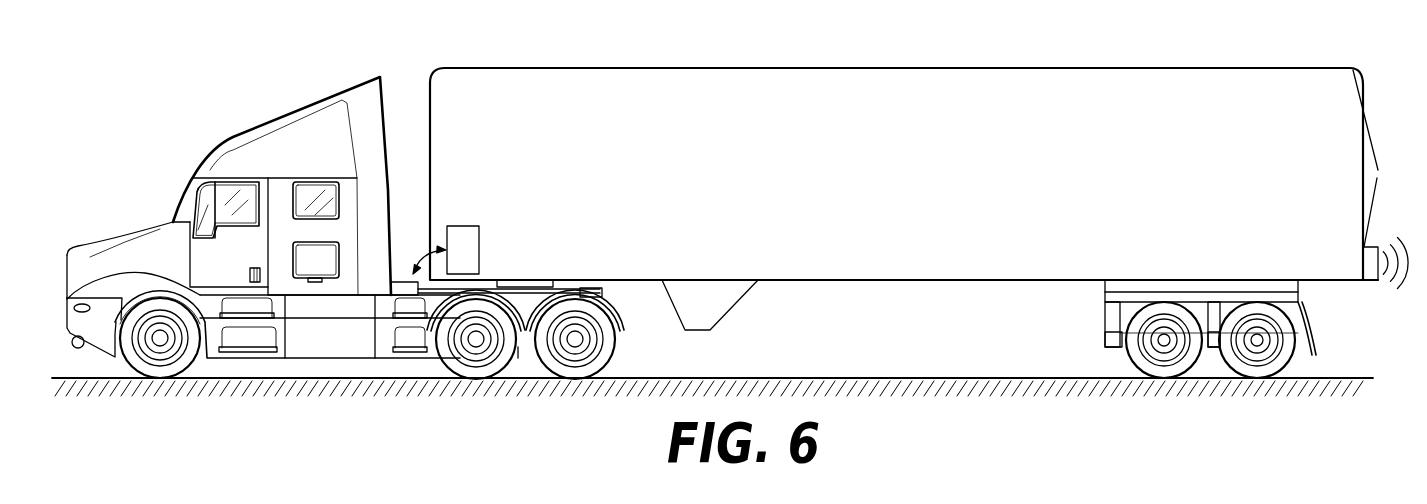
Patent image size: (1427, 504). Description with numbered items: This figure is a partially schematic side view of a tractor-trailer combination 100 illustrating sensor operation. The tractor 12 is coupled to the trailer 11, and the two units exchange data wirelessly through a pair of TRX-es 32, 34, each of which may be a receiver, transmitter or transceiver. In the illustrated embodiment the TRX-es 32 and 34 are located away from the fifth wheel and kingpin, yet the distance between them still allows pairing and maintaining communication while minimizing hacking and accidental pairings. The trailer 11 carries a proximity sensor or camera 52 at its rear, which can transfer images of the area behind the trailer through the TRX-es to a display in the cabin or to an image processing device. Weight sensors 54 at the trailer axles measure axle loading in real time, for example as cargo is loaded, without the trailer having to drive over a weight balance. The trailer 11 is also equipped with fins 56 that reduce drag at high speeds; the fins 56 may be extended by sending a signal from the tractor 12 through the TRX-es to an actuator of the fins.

The tractor-trailer vehicle 100 is at (186, 132).
The tractor 12 is at (285, 113).
The trailer 11 is at (1195, 75).
The TRX 32 is at (401, 282).
The TRX 34 is at (470, 226).
The proximity sensor or camera 52 is at (1371, 245).
The weight sensors 54 is at (1122, 348).
The fins 56 is at (1368, 127).